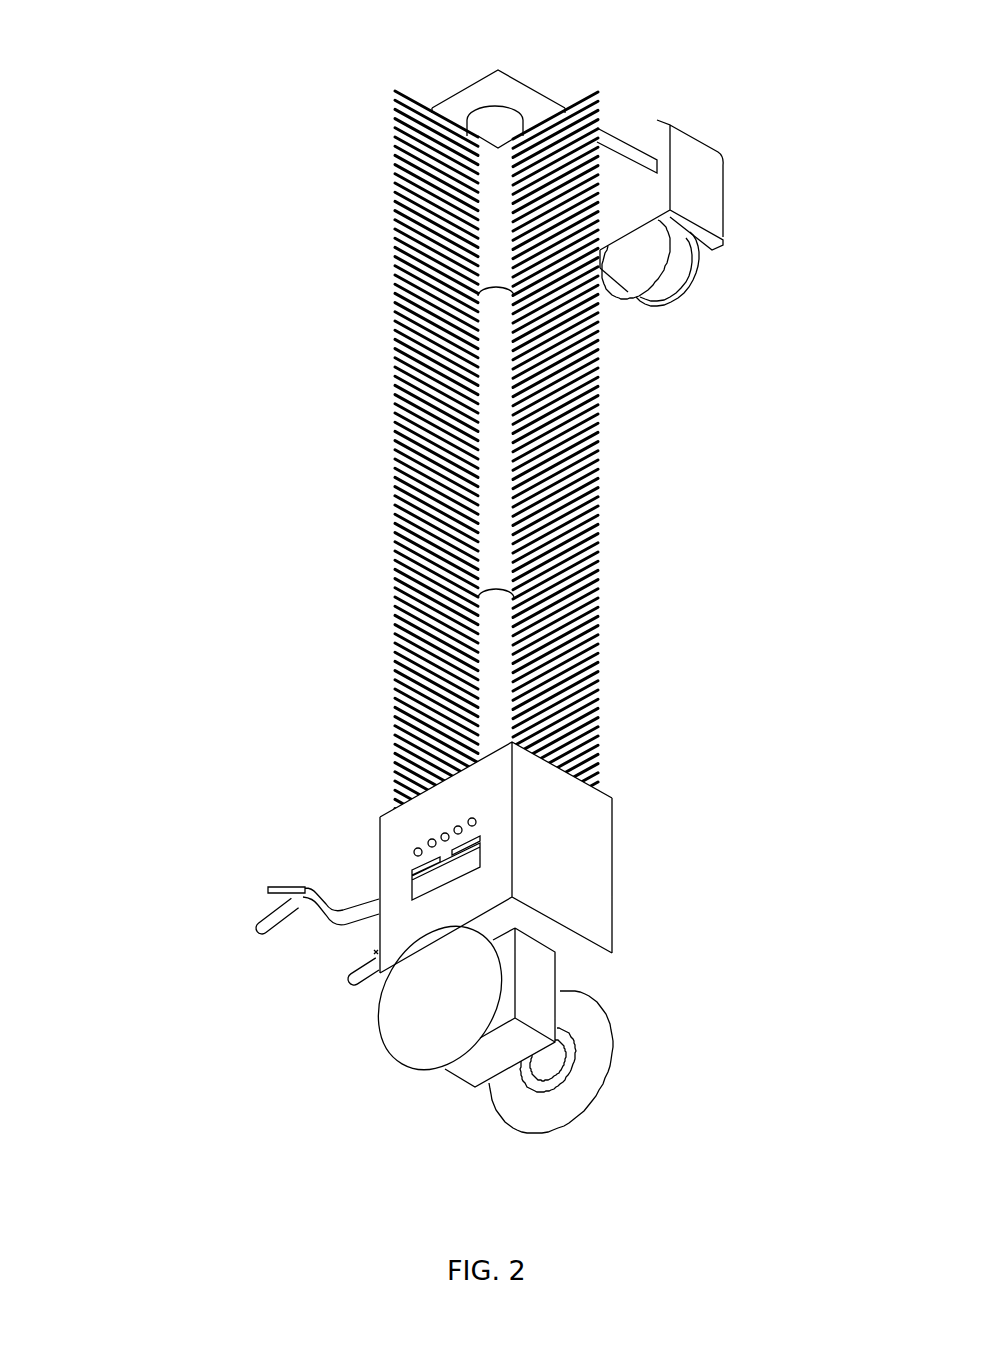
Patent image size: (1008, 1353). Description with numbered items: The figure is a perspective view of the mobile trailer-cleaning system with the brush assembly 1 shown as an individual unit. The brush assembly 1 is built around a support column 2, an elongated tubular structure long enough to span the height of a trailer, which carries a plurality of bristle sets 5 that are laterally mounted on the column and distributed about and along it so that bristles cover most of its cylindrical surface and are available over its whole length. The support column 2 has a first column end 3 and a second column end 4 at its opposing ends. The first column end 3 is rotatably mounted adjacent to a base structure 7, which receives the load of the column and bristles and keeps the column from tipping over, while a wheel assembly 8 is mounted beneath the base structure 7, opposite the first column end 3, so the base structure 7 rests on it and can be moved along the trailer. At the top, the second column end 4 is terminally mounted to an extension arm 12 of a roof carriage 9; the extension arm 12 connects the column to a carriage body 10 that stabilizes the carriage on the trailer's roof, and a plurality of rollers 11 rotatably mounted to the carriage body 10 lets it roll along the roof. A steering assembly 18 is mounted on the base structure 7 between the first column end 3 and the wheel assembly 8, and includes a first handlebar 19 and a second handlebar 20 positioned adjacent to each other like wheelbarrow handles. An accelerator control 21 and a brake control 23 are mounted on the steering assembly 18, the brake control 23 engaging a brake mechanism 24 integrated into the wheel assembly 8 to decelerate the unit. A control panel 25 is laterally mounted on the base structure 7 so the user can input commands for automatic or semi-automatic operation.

The brush assembly 1 is at (262, 452).
The support column 2 is at (500, 740).
The first column end 3 is at (482, 752).
The second column end 4 is at (478, 110).
The plurality of bristle sets 5 is at (392, 278).
The base structure 7 is at (600, 885).
The wheel assembly 8 is at (598, 1047).
The roof carriage 9 is at (730, 243).
The carriage body 10 is at (705, 193).
The plurality of rollers 11 is at (690, 268).
The extension arm 12 is at (533, 97).
The steering assembly 18 is at (219, 939).
The first handlebar 19 is at (355, 980).
The second handlebar 20 is at (350, 910).
The accelerator control 21 is at (375, 952).
The brake control 23 is at (270, 890).
The brake mechanism 24 is at (540, 1058).
The control panel 25 is at (492, 858).